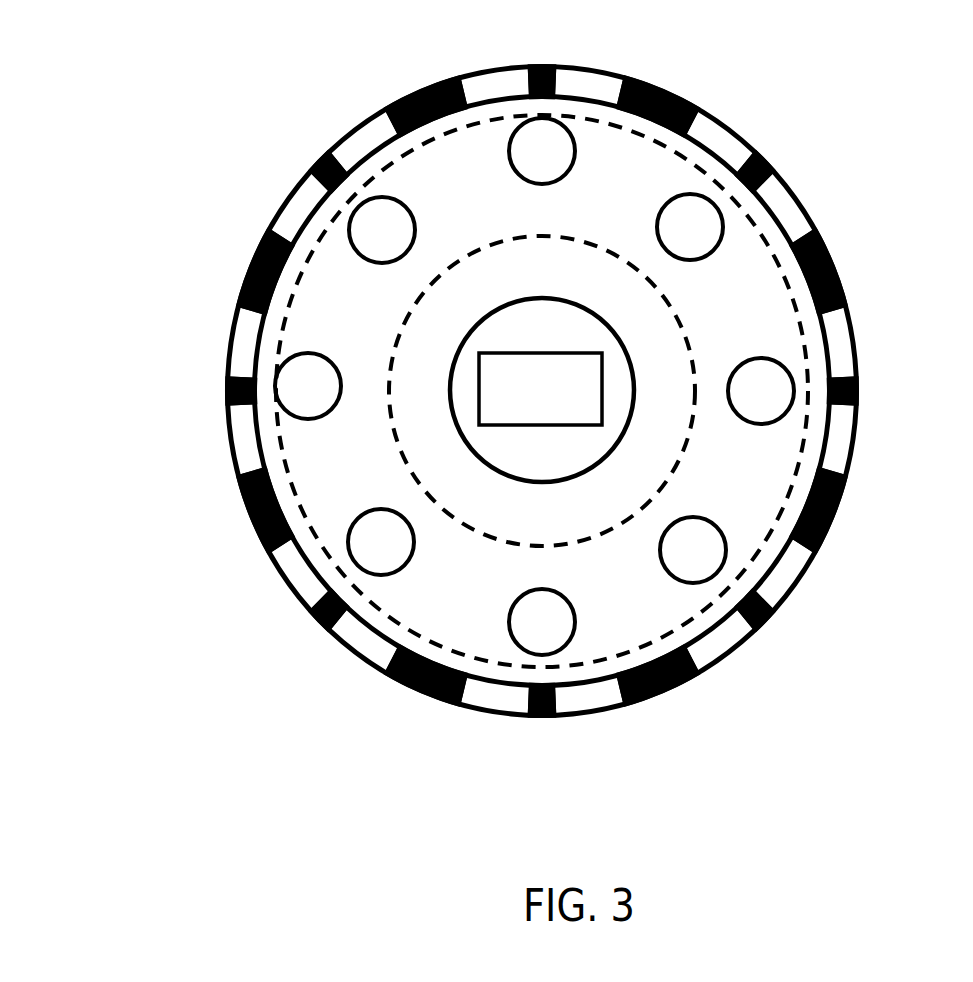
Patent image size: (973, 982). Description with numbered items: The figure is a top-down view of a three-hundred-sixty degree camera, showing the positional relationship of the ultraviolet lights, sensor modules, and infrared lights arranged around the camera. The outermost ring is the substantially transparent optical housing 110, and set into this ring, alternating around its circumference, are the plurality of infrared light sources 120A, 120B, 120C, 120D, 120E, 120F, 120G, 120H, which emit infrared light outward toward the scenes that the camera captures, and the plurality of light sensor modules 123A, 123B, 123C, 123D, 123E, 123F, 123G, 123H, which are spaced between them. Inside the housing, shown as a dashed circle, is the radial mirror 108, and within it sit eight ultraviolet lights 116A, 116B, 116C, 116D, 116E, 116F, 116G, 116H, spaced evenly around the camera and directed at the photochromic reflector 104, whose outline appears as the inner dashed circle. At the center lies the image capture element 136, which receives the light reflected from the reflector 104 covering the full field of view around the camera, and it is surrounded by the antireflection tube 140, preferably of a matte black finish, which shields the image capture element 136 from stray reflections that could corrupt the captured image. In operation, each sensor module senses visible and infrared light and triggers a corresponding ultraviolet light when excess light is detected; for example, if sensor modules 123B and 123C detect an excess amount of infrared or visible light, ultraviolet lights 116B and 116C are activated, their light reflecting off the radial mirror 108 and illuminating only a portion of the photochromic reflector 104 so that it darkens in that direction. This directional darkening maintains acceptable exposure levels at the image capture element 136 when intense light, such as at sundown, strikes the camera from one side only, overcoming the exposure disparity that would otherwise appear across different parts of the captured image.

The photochromic reflector 104 is at (693, 357).
The radial mirror 108 is at (284, 331).
The optical housing 110 is at (490, 100).
The UV light 116A is at (542, 152).
The UV light 116B is at (690, 247).
The UV light 116C is at (777, 393).
The UV light 116D is at (695, 562).
The UV light 116E is at (540, 632).
The UV light 116F is at (385, 520).
The UV light 116G is at (303, 370).
The UV light 116H is at (382, 245).
The infrared light source 120A is at (667, 87).
The infrared light source 120B is at (828, 265).
The infrared light source 120C is at (833, 523).
The infrared light source 120D is at (678, 687).
The infrared light source 120E is at (420, 695).
The infrared light source 120F is at (248, 513).
The infrared light source 120G is at (258, 247).
The infrared light source 120H is at (407, 95).
The sensor module 123A is at (548, 66).
The sensor module 123B is at (767, 160).
The sensor module 123C is at (858, 400).
The sensor module 123D is at (768, 622).
The sensor module 123E is at (547, 718).
The sensor module 123F is at (312, 618).
The sensor module 123G is at (230, 400).
The sensor module 123H is at (320, 165).
The image capture element 136 is at (558, 403).
The antireflection tube 140 is at (575, 478).